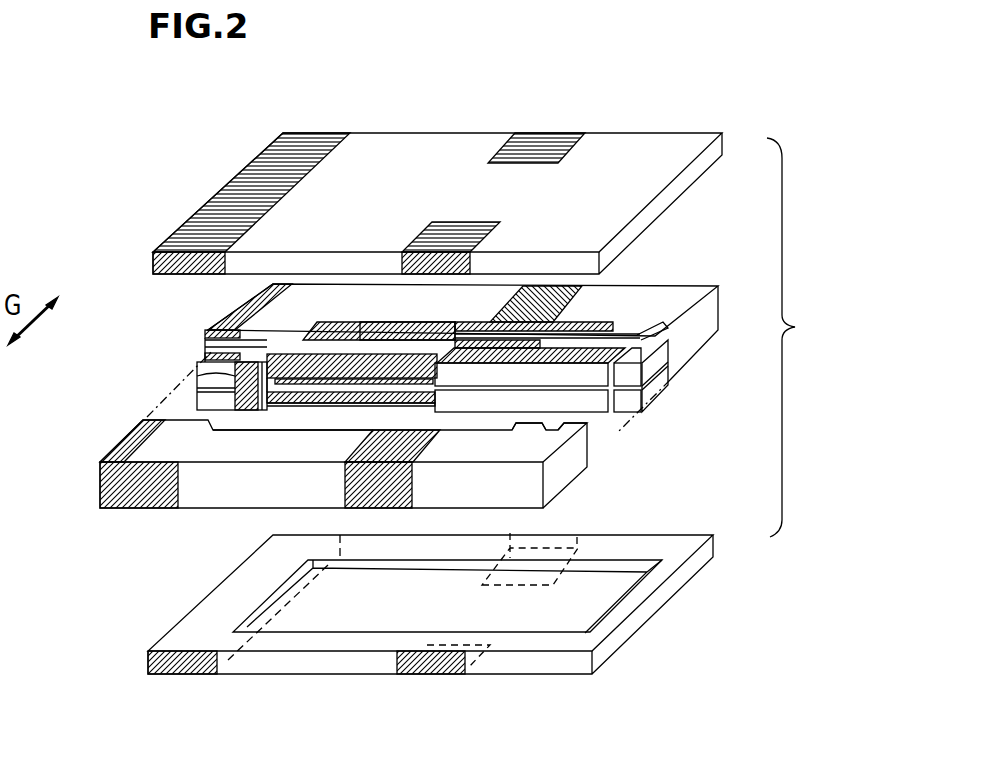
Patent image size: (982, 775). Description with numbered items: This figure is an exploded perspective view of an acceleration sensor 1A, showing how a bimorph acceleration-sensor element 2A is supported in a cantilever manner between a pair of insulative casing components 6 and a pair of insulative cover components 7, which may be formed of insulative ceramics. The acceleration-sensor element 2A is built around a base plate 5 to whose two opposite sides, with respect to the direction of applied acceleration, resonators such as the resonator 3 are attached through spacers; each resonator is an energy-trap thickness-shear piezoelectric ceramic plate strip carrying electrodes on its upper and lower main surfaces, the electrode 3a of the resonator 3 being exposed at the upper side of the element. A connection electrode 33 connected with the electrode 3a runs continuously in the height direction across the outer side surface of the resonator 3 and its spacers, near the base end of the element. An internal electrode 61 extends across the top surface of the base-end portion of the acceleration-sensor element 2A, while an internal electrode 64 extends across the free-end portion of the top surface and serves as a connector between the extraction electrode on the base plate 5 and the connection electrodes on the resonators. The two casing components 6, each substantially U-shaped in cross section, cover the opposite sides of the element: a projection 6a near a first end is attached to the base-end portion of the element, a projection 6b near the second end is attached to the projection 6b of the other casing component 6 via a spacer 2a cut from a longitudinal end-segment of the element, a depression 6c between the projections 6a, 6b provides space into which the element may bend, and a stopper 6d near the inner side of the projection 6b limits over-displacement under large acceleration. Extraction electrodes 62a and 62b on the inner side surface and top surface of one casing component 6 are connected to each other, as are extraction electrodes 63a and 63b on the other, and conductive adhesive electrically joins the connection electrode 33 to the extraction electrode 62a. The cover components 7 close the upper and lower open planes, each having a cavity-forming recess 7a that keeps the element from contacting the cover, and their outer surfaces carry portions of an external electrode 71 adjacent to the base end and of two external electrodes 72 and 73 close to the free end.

The acceleration sensor 1A is at (799, 337).
The acceleration-sensor element 2A is at (214, 325).
The spacer 2a is at (652, 416).
The resonator 3 is at (372, 397).
The electrode 3a is at (327, 384).
The base plate 5 is at (347, 343).
The casing component 6 is at (696, 286).
The projection 6a is at (182, 424).
The projection 6b is at (590, 425).
The depression 6c is at (291, 432).
The stopper 6d is at (525, 430).
The cover component 7 is at (400, 135).
The cavity-forming recess 7a is at (593, 605).
The connection electrode 33 is at (197, 380).
The internal electrode 61 is at (262, 300).
The extraction electrode 62a is at (350, 432).
The extraction electrode 62b is at (433, 442).
The extraction electrode 63a is at (403, 335).
The extraction electrode 63b is at (578, 303).
The internal electrode 64 is at (460, 357).
The external electrode 71 is at (245, 170).
The external electrode 72 is at (440, 228).
The external electrode 73 is at (538, 137).